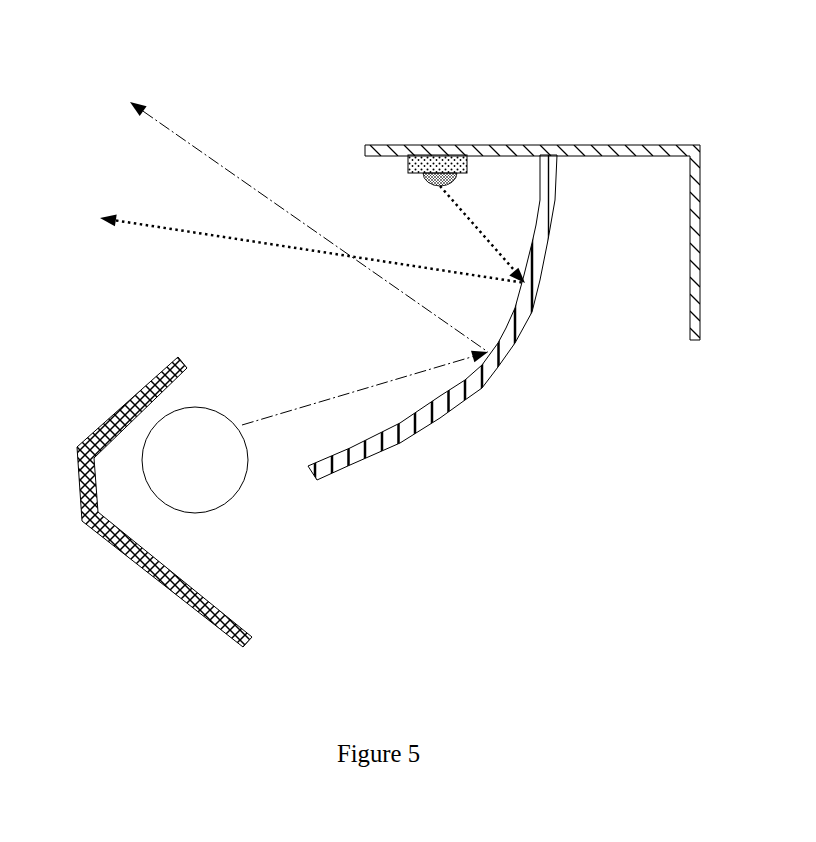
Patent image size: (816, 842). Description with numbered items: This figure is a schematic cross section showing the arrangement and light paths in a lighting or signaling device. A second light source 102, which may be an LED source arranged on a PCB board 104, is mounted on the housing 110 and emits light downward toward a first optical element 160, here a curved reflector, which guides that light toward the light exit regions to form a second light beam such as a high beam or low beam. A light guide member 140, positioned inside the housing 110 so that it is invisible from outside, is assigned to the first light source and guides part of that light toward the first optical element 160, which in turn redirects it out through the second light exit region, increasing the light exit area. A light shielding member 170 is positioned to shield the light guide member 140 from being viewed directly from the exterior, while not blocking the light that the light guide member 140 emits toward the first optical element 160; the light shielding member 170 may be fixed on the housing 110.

The second light source 102 is at (423, 178).
The PCB board 104 is at (437, 170).
The housing 110 is at (577, 145).
The light guide member 140 is at (230, 503).
The first optical element 160 is at (460, 407).
The light shielding member 170 is at (140, 563).